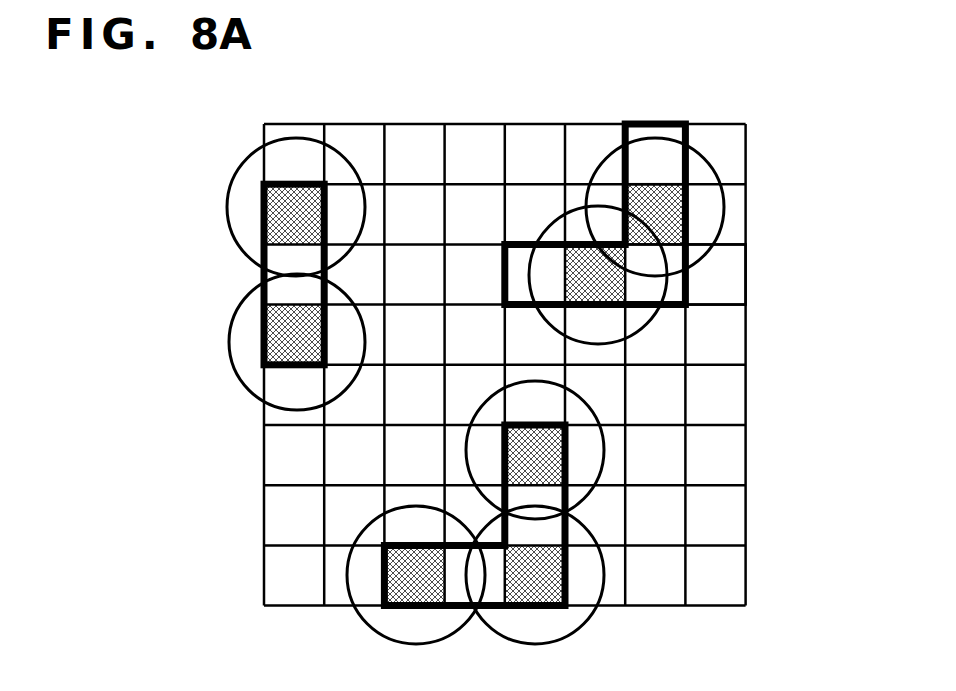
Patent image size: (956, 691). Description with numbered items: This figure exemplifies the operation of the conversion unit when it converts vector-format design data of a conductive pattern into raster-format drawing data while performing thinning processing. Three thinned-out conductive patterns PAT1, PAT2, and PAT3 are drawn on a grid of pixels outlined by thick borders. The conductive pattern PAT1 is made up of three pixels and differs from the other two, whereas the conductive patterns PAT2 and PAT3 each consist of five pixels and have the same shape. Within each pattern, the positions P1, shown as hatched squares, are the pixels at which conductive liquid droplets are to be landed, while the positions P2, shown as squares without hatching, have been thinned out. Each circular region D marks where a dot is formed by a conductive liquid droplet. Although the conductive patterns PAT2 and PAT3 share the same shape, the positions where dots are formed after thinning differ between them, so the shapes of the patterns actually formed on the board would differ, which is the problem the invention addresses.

The region D is at (246, 158).
The conductive pattern PAT1 is at (270, 210).
The conductive pattern PAT2 is at (697, 153).
The conductive pattern PAT3 is at (425, 610).
The position (pixel) P1 is at (667, 220).
The position (pixel) P2 is at (676, 297).